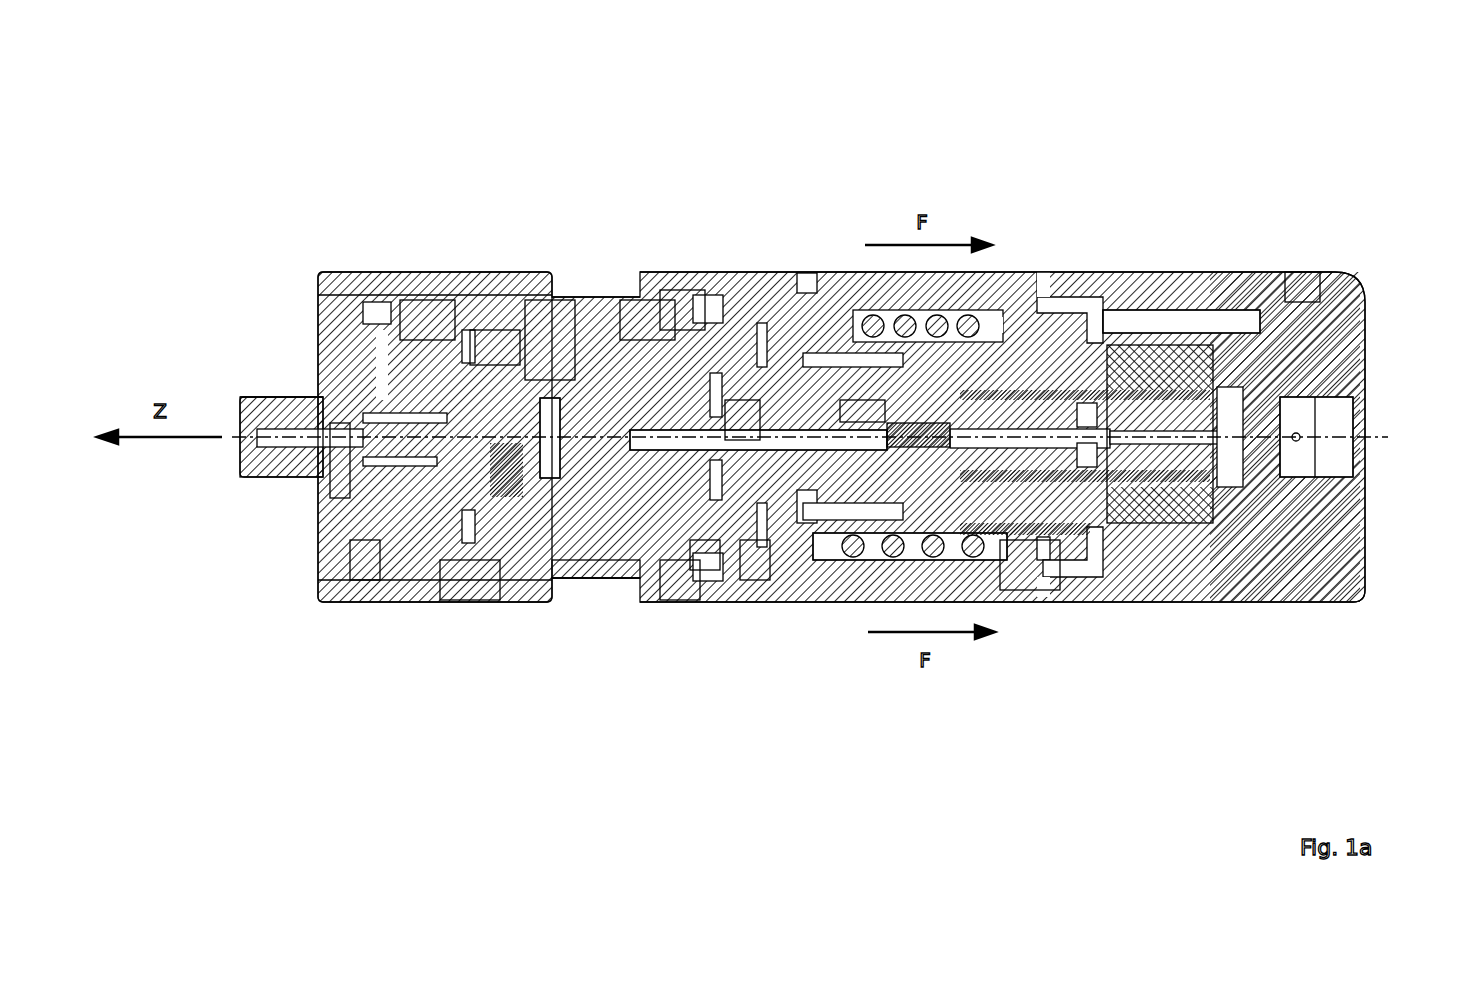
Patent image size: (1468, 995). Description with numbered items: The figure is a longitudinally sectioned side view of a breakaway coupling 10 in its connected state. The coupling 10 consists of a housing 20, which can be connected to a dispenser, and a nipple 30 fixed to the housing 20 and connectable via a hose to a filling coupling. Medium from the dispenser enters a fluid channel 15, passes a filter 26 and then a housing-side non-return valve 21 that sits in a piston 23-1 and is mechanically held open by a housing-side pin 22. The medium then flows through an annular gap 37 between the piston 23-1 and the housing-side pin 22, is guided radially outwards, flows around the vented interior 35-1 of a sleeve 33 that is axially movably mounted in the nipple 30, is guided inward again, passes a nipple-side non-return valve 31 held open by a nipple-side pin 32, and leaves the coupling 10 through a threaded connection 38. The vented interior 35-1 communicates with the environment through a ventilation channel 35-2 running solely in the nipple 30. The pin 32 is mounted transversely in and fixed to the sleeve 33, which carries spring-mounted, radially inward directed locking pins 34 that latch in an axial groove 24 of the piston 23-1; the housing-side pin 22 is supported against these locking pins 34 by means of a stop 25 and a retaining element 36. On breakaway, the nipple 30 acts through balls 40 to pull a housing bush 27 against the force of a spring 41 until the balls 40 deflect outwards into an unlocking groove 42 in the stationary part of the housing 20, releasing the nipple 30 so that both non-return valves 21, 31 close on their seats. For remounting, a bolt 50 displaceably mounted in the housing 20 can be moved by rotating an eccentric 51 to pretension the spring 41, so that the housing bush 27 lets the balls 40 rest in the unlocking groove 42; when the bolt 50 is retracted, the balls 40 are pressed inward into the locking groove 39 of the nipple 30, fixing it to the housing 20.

The coupling 10 is at (885, 140).
The fluid channel 15 is at (243, 478).
The housing 20 is at (1385, 565).
The housing-side non-return valve 21 is at (1023, 580).
The housing-side pin 22 is at (783, 300).
The piston 23-1 is at (857, 408).
The axial groove 24 is at (560, 337).
The stop 25 is at (685, 300).
The filter 26 is at (1100, 580).
The housing bush 27 is at (470, 596).
The nipple 30 is at (295, 542).
The nipple-side non-return valve 31 is at (370, 560).
The nipple-side pin 32 is at (440, 325).
The sleeve 33 is at (590, 560).
The locking pins 34 is at (600, 335).
The vented interior 35-1 is at (500, 345).
The ventilation channel 35-2 is at (340, 493).
The retaining element 36 is at (650, 330).
The annular gap 37 is at (742, 420).
The threaded connection 38 is at (300, 398).
The locking groove 39 is at (703, 560).
The balls 40 is at (751, 560).
The spring 41 is at (840, 580).
The unlocking groove 42 is at (684, 583).
The bolt 50 is at (1163, 270).
The eccentric 51 is at (1298, 270).